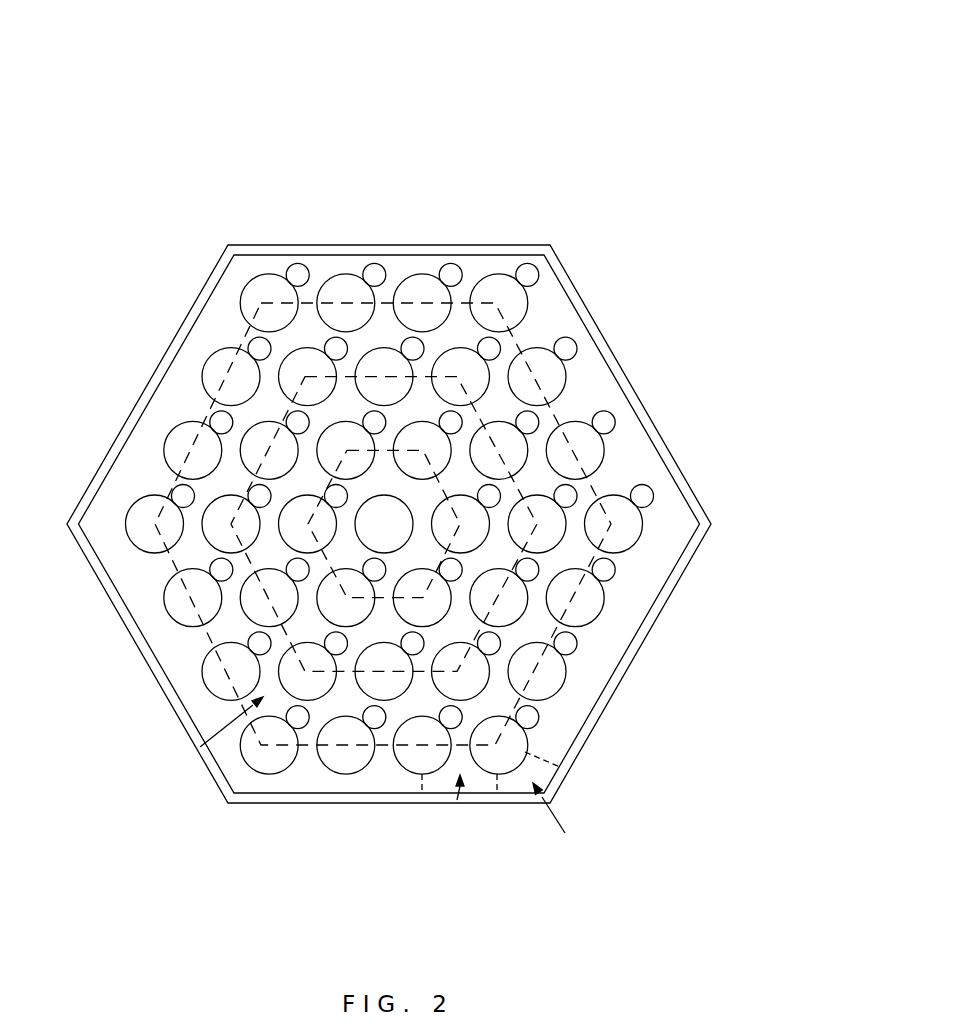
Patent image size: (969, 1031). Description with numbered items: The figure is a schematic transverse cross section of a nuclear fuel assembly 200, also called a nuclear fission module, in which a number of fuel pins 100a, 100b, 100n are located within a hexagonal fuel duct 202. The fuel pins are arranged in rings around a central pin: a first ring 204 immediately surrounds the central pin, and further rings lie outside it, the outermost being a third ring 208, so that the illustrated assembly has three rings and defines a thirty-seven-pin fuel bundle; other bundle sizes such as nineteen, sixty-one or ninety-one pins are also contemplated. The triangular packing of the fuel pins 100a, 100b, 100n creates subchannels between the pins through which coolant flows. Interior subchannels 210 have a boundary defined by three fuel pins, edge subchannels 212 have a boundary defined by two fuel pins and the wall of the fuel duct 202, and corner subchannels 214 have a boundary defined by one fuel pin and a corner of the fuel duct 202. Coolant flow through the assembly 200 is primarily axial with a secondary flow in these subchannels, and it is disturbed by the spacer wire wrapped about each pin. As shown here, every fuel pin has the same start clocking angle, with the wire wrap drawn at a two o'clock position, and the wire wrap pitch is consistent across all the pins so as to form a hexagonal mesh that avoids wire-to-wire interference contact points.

The nuclear fuel assembly 200 is at (429, 455).
The fuel pin 100a is at (257, 292).
The fuel pin 100b is at (217, 367).
The fuel pin 100n is at (178, 452).
The fuel duct 202 is at (600, 328).
The first ring 204 is at (445, 485).
The third ring 208 is at (597, 495).
The interior subchannel 210 is at (200, 747).
The edge subchannel 212 is at (457, 800).
The corner subchannel 214 is at (565, 833).